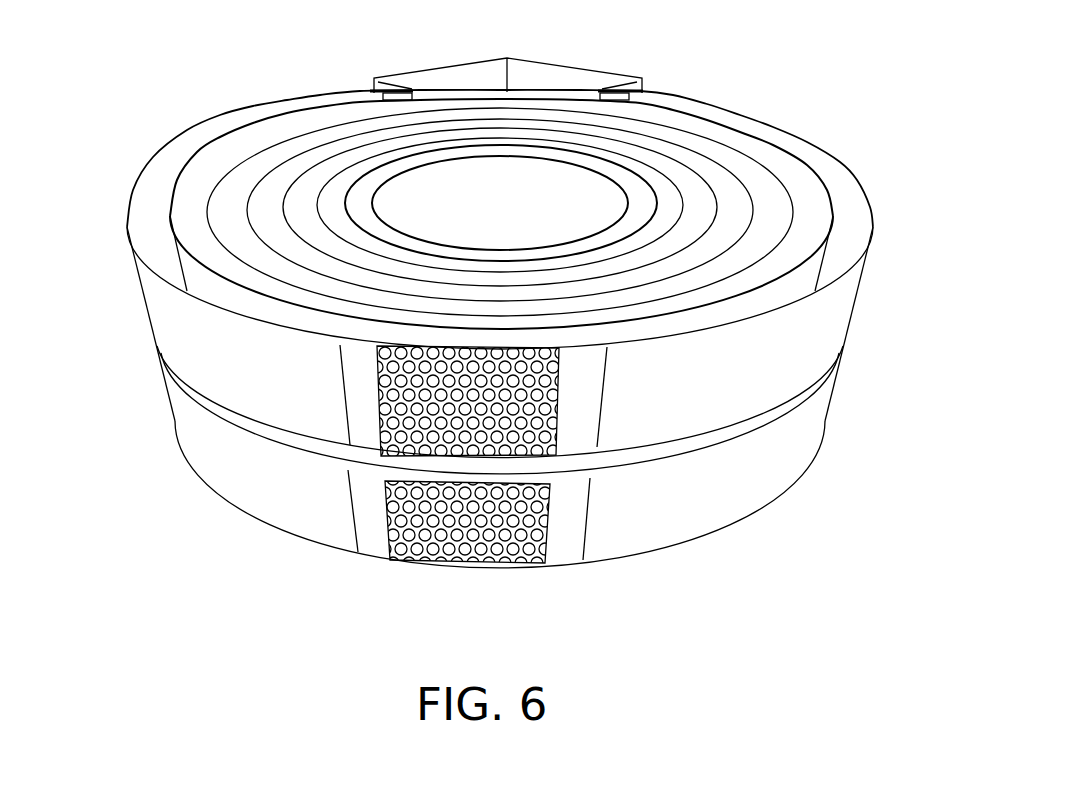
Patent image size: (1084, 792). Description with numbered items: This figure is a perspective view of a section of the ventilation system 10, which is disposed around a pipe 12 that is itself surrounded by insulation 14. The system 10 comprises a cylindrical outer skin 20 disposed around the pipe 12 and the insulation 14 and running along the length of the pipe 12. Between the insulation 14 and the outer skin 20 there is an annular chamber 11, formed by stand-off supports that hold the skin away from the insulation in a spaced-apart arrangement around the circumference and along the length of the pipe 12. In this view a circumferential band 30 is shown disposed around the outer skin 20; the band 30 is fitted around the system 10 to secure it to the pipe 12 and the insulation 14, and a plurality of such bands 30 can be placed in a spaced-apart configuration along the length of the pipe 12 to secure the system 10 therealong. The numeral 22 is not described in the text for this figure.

The ventilation system 10 is at (726, 82).
The annular chamber 11 is at (146, 220).
The pipe 12 is at (373, 198).
The insulation 14 is at (778, 207).
The outer skin 20 is at (875, 219).
The perforated mesh window 22 is at (497, 571).
The circumferential band 30 is at (633, 458).